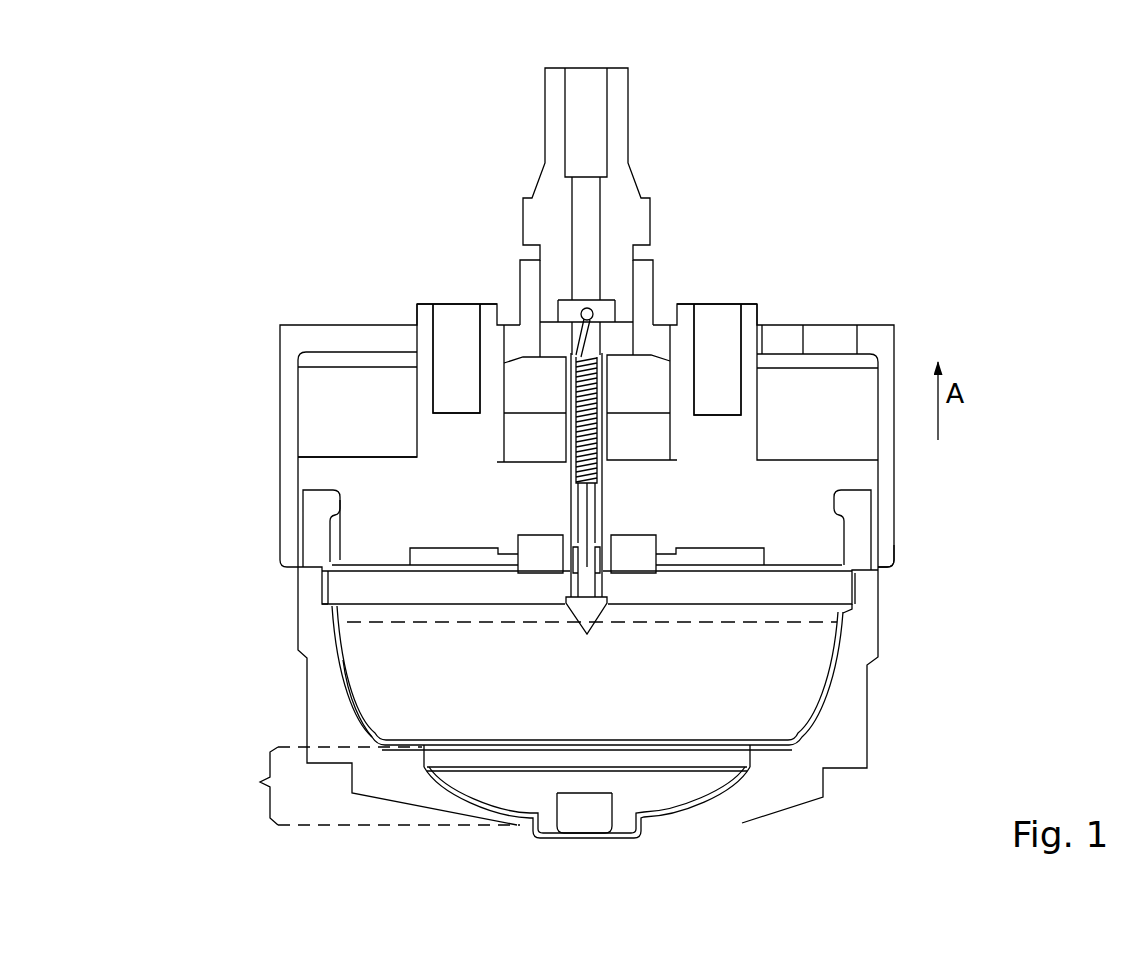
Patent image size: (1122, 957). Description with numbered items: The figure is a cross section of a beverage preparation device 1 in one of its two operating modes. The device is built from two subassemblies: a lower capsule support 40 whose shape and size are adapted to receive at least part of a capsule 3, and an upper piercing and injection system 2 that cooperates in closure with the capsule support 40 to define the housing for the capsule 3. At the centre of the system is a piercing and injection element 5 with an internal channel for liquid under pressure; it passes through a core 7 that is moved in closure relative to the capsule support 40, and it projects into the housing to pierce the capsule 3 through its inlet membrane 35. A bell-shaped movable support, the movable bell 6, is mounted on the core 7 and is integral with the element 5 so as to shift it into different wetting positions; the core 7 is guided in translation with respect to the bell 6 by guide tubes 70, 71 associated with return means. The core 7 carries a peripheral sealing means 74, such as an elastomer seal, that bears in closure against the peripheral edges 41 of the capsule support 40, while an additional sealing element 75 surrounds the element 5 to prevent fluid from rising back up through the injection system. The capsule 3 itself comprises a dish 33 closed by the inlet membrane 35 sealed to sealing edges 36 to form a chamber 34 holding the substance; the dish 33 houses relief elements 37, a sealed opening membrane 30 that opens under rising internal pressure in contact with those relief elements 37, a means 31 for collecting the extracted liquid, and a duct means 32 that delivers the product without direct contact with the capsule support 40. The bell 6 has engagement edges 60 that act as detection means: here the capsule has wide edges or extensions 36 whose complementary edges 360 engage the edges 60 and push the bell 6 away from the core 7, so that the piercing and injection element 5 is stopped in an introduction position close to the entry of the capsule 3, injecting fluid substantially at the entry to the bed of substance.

The preparation device 1 is at (277, 233).
The piercing and injection system 2 is at (1013, 532).
The capsule 3 is at (687, 807).
The piercing and injection element 5 is at (523, 498).
The movable bell 6 is at (902, 343).
The core 7 is at (372, 527).
The membrane 30 is at (746, 742).
The means for collecting the liquid 31 is at (253, 783).
The duct means 32 is at (580, 820).
The dish 33 is at (362, 712).
The chamber 34 is at (362, 653).
The inlet membrane 35 is at (430, 562).
The sealing edges 36 is at (874, 556).
The relief elements 37 is at (740, 772).
The capsule support 40 is at (880, 685).
The peripheral edges 41 is at (310, 593).
The engagement edges 60 is at (886, 562).
The guide tube 70 is at (428, 323).
The guide tube 71 is at (745, 323).
The peripheral sealing means 74 is at (327, 543).
The additional sealing element 75 is at (632, 550).
The complementary edges 360 is at (880, 572).